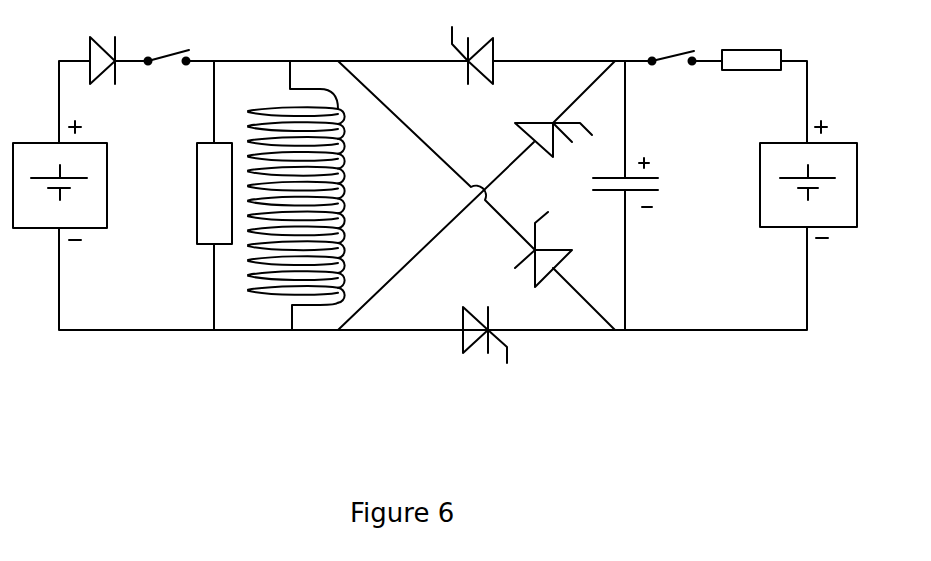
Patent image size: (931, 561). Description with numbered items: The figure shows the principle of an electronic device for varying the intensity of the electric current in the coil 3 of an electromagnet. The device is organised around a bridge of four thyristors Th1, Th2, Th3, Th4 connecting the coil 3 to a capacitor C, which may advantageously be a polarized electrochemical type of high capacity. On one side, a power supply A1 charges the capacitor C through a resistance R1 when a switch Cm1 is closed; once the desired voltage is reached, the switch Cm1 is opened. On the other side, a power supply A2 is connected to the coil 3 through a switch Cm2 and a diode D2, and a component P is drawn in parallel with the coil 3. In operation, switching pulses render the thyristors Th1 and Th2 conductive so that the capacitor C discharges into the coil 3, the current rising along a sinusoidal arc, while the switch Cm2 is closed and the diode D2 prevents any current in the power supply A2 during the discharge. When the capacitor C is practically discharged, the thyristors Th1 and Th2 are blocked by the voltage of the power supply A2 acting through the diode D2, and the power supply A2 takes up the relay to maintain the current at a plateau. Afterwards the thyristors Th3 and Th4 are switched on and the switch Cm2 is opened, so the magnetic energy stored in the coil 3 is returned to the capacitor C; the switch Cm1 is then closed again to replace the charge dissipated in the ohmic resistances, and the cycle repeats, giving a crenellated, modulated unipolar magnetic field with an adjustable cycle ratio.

The power supply A2 is at (78, 180).
The diode D2 is at (104, 46).
The switch Cm2 is at (169, 43).
The load / resistor P is at (202, 195).
The coil 3 is at (348, 205).
The thyristor Th1 is at (476, 46).
The thyristor Th2 is at (480, 350).
The thyristor Th3 is at (553, 120).
The thyristor Th4 is at (554, 249).
The capacitor C is at (640, 195).
The switch Cm1 is at (672, 43).
The resistance R1 is at (751, 44).
The power supply A1 is at (792, 179).